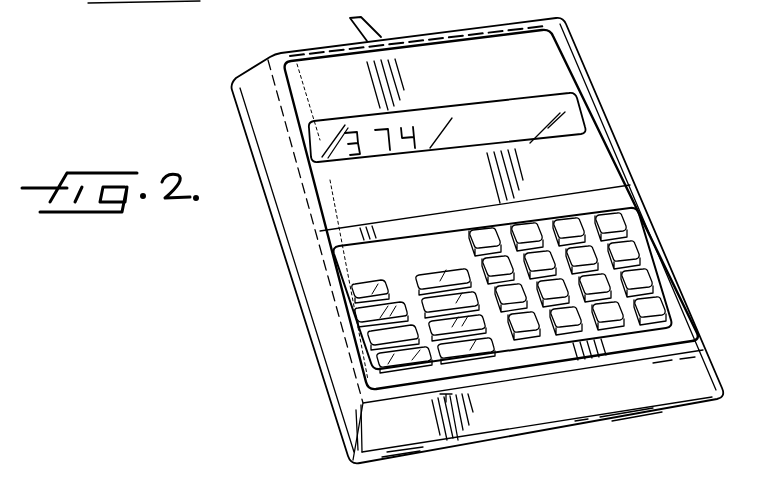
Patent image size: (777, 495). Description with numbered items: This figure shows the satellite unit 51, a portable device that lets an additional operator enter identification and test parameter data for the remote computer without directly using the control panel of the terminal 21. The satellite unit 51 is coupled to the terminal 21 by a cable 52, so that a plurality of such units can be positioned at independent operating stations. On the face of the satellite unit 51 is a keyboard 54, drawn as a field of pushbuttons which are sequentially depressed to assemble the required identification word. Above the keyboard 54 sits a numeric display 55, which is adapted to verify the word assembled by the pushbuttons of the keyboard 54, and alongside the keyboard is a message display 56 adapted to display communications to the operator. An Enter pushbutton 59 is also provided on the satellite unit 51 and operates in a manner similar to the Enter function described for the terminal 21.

The terminal 21 is at (90, 3).
The satellite unit 51 is at (291, 276).
The cable 52 is at (352, 24).
The keyboard 54 is at (610, 236).
The numeric display 55 is at (428, 118).
The message display 56 is at (385, 337).
The Enter pushbutton 59 is at (650, 308).